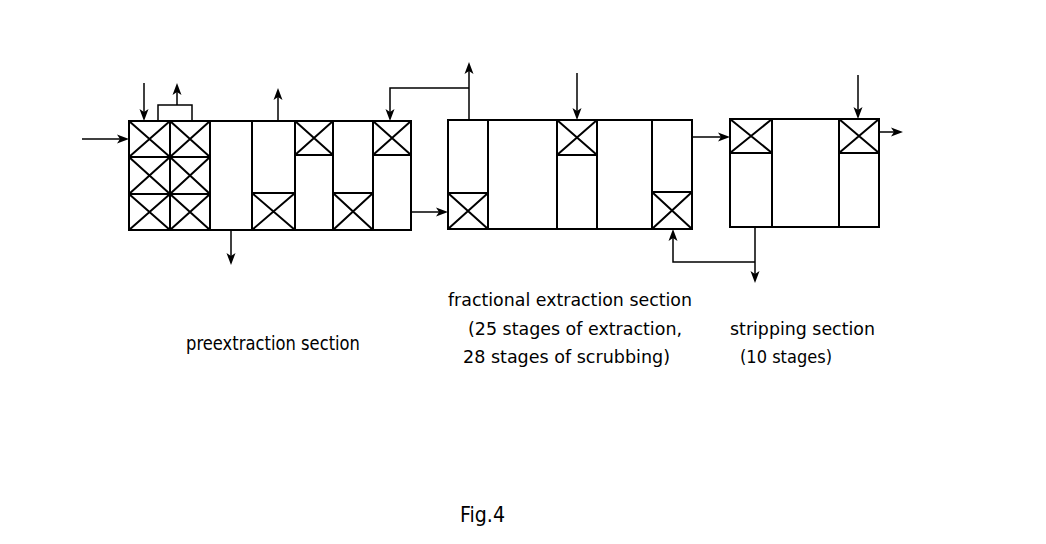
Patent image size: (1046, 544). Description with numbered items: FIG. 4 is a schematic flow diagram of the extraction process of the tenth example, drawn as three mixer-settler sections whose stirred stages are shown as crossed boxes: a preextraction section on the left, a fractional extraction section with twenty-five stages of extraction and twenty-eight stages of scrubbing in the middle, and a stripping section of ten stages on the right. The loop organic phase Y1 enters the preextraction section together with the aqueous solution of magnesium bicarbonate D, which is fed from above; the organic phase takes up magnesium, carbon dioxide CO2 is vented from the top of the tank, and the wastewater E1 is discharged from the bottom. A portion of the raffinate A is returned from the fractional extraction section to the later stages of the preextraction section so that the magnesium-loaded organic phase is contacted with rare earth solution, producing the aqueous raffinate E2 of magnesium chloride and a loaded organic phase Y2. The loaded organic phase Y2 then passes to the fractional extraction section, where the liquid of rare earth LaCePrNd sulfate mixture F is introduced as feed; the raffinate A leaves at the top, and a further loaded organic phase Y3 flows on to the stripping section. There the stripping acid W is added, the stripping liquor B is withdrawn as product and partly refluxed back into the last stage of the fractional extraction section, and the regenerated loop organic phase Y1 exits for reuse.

The loop organic phase Y1 is at (489, 137).
The aqueous solution of magnesium bicarbonate D is at (142, 91).
The carbon dioxide vent CO2 is at (175, 91).
The aqueous raffinate E2 is at (276, 92).
The wastewater E1 is at (230, 266).
The raffinate A is at (430, 80).
The liquid of rare earth LaCePrNd sulfate mixture F is at (576, 86).
The loaded organic phase Y2 is at (429, 202).
The loaded organic phase Y3 is at (711, 127).
The stripping acid W is at (856, 83).
The stripping liquor B is at (714, 270).